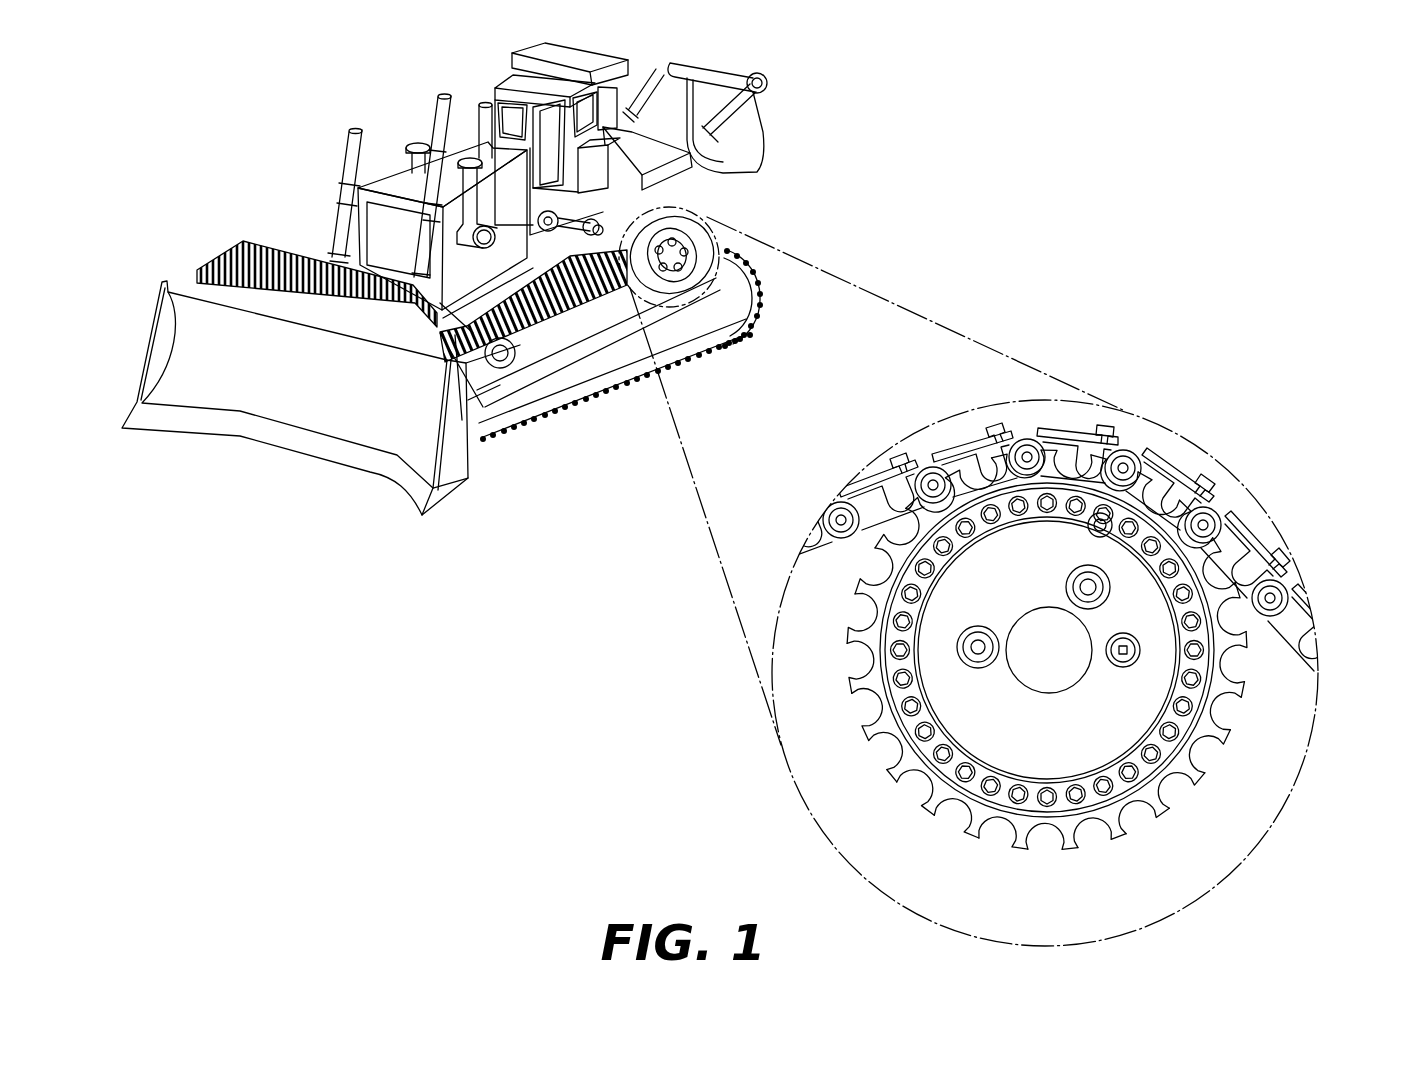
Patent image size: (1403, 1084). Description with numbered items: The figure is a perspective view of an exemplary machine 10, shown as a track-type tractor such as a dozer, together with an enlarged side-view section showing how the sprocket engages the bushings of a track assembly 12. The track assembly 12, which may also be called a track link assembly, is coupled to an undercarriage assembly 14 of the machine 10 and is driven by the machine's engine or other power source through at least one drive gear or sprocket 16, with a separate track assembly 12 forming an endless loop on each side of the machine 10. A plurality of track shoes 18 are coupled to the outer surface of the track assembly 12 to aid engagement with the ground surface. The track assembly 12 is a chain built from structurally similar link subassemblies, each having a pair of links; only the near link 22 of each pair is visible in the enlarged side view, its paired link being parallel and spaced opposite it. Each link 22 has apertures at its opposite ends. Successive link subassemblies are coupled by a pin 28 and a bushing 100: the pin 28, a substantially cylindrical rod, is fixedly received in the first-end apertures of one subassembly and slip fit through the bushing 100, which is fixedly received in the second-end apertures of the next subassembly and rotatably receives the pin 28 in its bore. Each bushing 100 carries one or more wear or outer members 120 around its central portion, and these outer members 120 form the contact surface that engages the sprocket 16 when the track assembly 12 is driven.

The machine 10 is at (200, 131).
The track assembly 12 is at (748, 262).
The undercarriage assembly 14 is at (770, 293).
The sprocket 16 is at (692, 231).
The track shoes 18 is at (941, 448).
The link 22 is at (963, 447).
The pin 28 is at (1037, 433).
The bushing 100 is at (1028, 453).
The outer members 120 is at (1000, 457).